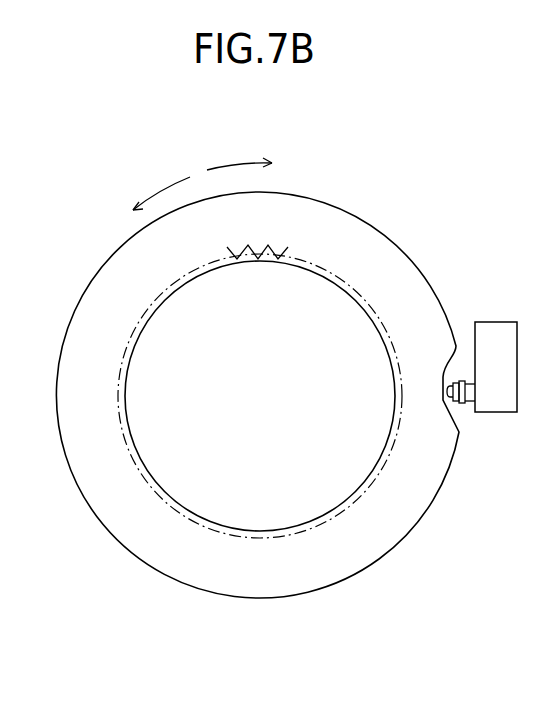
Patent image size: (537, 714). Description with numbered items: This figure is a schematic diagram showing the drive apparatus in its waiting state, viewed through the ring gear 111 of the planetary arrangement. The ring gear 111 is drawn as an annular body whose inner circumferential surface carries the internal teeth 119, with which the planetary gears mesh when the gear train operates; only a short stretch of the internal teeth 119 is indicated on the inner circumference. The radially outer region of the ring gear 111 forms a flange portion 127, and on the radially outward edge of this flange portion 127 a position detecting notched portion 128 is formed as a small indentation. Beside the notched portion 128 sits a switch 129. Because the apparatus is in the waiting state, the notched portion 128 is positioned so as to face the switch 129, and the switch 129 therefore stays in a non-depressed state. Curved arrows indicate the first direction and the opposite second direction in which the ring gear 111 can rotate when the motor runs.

The ring gear 111 is at (106, 138).
The flange portion 127 is at (348, 227).
The internal teeth 119 is at (254, 261).
The position detecting notched portion 128 is at (461, 378).
The switch 129 is at (496, 404).